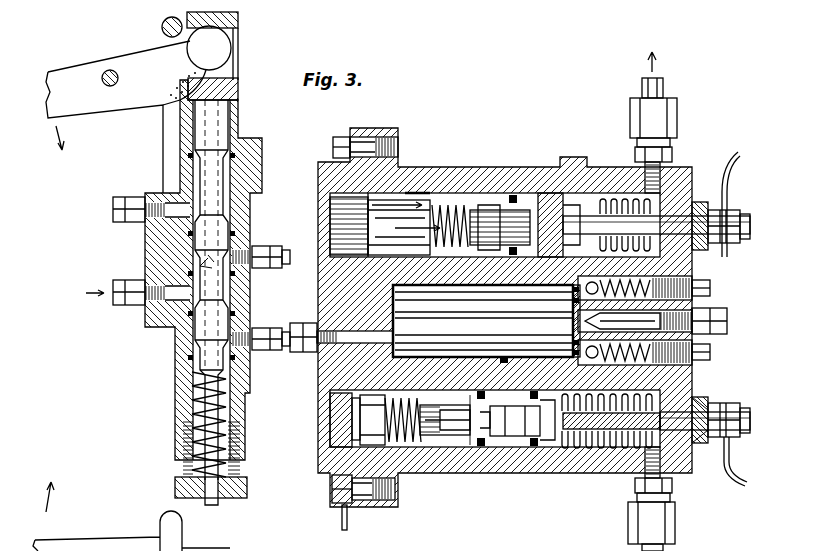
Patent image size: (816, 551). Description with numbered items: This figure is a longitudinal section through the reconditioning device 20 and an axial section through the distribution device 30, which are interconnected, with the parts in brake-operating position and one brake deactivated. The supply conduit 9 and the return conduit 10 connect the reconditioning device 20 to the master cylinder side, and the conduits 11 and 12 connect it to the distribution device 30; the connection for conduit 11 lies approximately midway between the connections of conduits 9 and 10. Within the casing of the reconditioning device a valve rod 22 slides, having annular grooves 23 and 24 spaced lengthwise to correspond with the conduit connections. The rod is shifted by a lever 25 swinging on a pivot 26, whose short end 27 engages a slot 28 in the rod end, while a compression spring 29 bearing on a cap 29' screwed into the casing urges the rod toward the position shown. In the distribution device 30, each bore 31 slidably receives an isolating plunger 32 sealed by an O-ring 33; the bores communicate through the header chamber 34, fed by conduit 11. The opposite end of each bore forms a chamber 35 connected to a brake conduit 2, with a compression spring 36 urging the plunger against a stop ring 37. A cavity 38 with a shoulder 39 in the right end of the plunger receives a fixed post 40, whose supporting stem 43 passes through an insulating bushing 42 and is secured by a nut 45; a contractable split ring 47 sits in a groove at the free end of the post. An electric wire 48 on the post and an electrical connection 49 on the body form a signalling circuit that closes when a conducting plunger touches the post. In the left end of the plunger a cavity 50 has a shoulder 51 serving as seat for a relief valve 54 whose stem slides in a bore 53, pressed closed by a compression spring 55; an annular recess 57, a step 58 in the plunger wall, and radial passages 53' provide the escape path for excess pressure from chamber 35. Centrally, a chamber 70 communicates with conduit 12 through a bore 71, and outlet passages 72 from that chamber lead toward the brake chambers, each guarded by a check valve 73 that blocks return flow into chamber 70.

The brake conduit 2 is at (642, 86).
The supply conduit 9 is at (113, 290).
The return conduit 10 is at (117, 205).
The conduit 11 is at (285, 246).
The conduit 12 is at (276, 350).
The reconditioning device 20 is at (175, 362).
The valve rod 22 is at (228, 120).
The annular groove 23 is at (206, 183).
The annular groove 24 is at (207, 257).
The lever 25 is at (68, 72).
The pivot 26 is at (112, 70).
The short end of the lever 27 is at (229, 70).
The slot 28 is at (234, 45).
The compression spring 29 is at (163, 424).
The cap 29' is at (176, 484).
The distribution device 30 is at (481, 178).
The bore 31 is at (418, 194).
The isolating piston or plunger 32 is at (425, 215).
The O-ring 33 is at (506, 197).
The header chamber 34 is at (336, 400).
The chamber 35 is at (623, 196).
The compression spring 36 is at (570, 450).
The ring 37 is at (368, 212).
The cavity 38 is at (515, 447).
The shoulder 39 is at (501, 447).
The post 40 is at (702, 215).
The insulating bushing 42 is at (706, 250).
The supporting stem 43 is at (698, 445).
The nut 45 is at (725, 246).
The split ring 47 is at (548, 200).
The electric wire 48 is at (738, 172).
The electrical connection 49 is at (342, 520).
The cavity 50 is at (415, 230).
The shoulder 51 is at (430, 392).
The bore 53 is at (491, 324).
The passage 53' is at (514, 361).
The valve 54 is at (460, 398).
The compression spring 55 is at (448, 205).
The annular recess 57 is at (440, 447).
The step 58 is at (490, 447).
The chamber 70 is at (483, 321).
The bore 71 is at (348, 335).
The outlet passage 72 is at (573, 293).
The check valve 73 is at (600, 320).